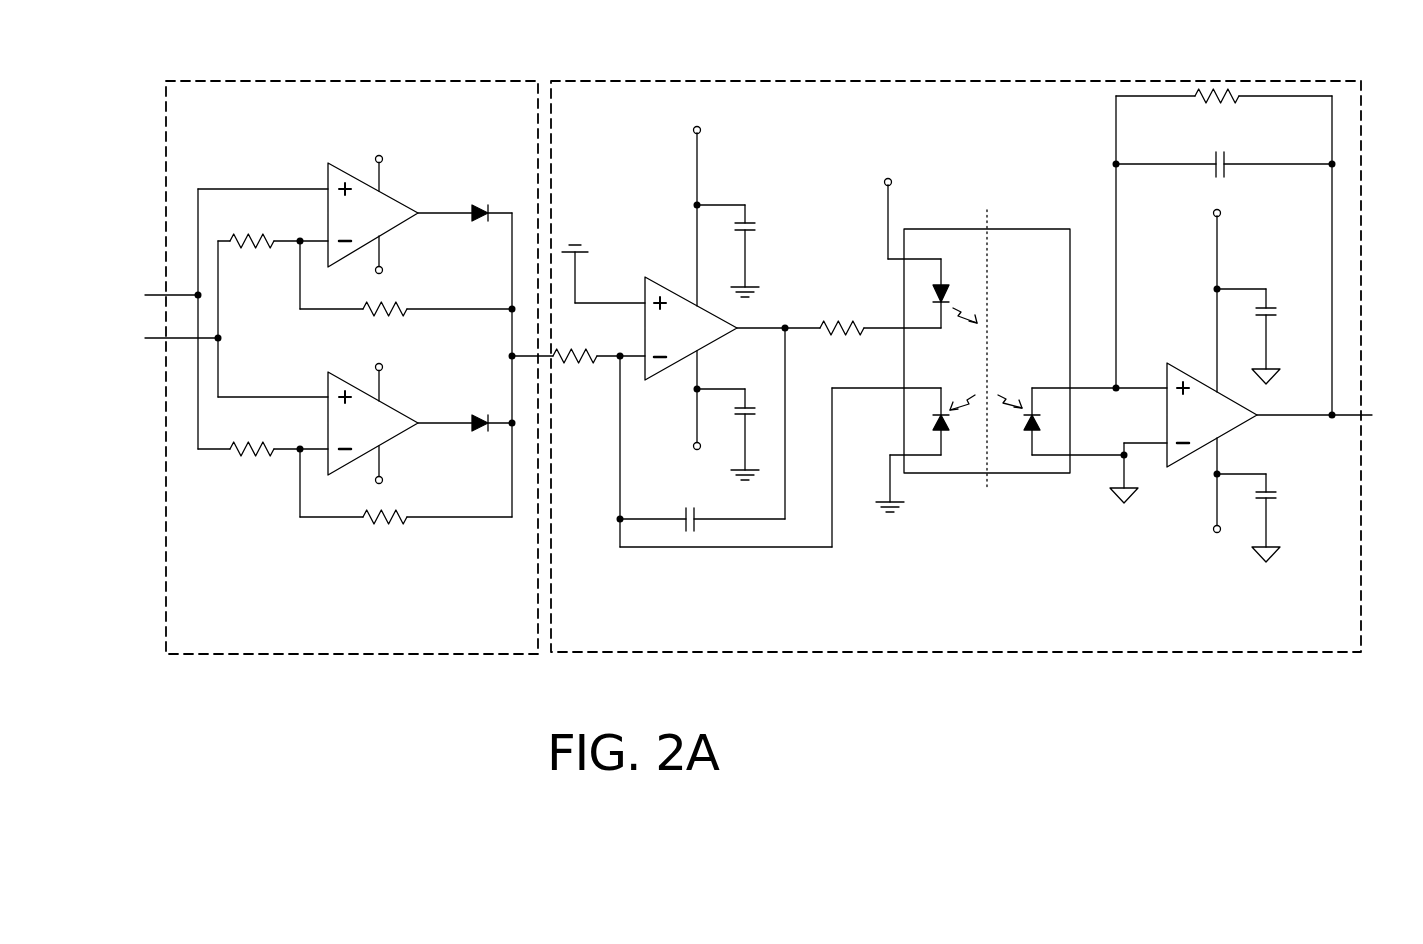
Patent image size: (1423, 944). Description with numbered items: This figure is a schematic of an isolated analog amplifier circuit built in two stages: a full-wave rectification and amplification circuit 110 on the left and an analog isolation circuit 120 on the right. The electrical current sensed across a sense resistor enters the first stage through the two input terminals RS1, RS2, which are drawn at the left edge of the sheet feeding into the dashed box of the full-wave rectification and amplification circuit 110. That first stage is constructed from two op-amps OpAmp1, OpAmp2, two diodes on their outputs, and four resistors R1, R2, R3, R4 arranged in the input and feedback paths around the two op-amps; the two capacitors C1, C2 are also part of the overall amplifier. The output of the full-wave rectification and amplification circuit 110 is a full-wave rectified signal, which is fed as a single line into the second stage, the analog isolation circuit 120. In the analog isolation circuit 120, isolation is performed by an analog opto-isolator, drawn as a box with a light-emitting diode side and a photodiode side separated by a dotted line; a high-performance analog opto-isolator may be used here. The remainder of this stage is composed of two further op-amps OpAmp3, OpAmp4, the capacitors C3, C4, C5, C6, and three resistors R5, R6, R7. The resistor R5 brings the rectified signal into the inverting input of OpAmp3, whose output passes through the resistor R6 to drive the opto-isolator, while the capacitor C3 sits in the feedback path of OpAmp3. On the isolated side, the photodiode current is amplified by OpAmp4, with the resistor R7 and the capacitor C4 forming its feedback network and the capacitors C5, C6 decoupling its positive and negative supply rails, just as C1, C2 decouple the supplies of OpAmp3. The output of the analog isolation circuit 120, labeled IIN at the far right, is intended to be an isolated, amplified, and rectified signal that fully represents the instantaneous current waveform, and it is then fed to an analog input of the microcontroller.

The full-wave rectification and amplification circuit 110 is at (222, 81).
The analog isolation circuit 120 is at (602, 81).
The input terminal RS1 is at (151, 296).
The input terminal RS2 is at (161, 339).
The op-amp OpAmp1 is at (354, 212).
The op-amp OpAmp2 is at (357, 418).
The op-amp OpAmp3 is at (673, 291).
The op-amp OpAmp4 is at (1192, 376).
The resistor R1 is at (273, 257).
The resistor R2 is at (263, 464).
The resistor R3 is at (408, 323).
The resistor R4 is at (406, 531).
The resistor R5 is at (578, 370).
The resistor R6 is at (839, 311).
The resistor R7 is at (1224, 106).
The capacitor C1 is at (745, 250).
The capacitor C2 is at (739, 433).
The capacitor C3 is at (701, 437).
The capacitor C4 is at (1224, 154).
The capacitor C5 is at (1264, 335).
The capacitor C6 is at (1264, 517).
The output current IIN is at (1337, 419).